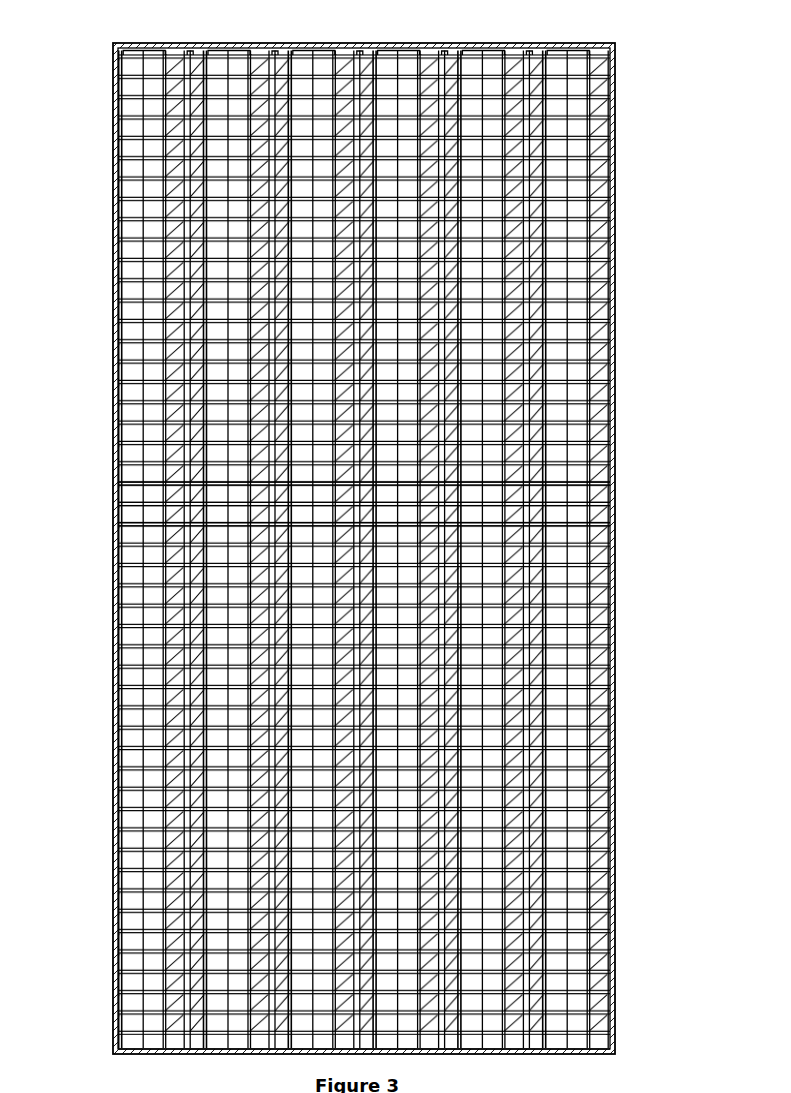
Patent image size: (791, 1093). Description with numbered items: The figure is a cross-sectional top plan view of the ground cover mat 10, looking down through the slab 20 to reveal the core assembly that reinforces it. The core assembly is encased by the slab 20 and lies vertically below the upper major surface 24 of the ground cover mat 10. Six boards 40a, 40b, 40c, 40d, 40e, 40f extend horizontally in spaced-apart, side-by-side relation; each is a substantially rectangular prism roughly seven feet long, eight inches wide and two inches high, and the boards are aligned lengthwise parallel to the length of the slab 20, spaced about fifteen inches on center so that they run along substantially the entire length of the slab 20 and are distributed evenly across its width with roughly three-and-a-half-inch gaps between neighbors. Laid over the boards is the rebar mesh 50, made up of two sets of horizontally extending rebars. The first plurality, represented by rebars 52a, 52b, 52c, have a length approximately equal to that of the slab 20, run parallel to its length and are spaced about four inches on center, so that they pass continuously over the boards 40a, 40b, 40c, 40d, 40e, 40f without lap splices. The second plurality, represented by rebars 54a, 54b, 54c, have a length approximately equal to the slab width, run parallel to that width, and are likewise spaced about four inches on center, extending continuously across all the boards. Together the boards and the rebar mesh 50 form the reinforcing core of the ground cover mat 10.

The ground cover mat 10 is at (640, 137).
The slab 20 is at (617, 312).
The upper major surface 24 is at (392, 1071).
The board 40a is at (157, 50).
The board 40b is at (228, 50).
The board 40c is at (320, 50).
The board 40d is at (409, 50).
The board 40e is at (493, 50).
The board 40f is at (578, 50).
The rebar mesh 50 is at (118, 685).
The rebar of the first plurality of rebars 52a is at (141, 1046).
The rebar of the first plurality of rebars 52b is at (164, 1046).
The rebar of the first plurality of rebars 52c is at (186, 1046).
The rebar of the second plurality of rebars 54a is at (125, 483).
The rebar of the second plurality of rebars 54b is at (125, 504).
The rebar of the second plurality of rebars 54c is at (125, 524).